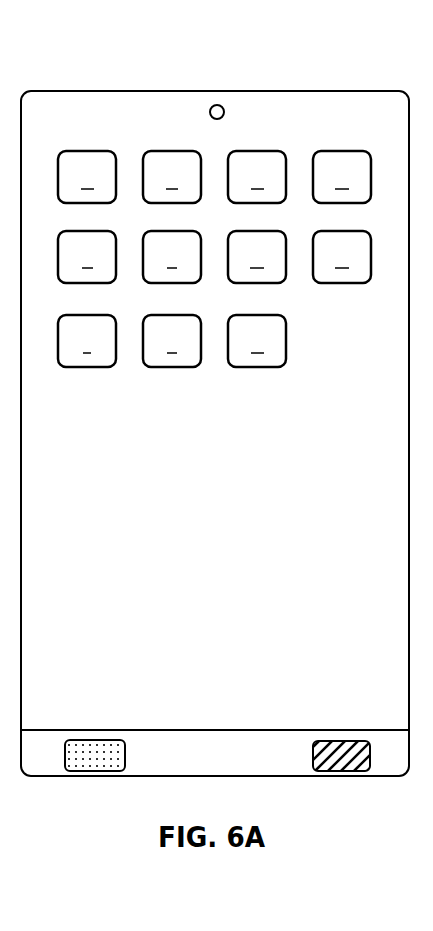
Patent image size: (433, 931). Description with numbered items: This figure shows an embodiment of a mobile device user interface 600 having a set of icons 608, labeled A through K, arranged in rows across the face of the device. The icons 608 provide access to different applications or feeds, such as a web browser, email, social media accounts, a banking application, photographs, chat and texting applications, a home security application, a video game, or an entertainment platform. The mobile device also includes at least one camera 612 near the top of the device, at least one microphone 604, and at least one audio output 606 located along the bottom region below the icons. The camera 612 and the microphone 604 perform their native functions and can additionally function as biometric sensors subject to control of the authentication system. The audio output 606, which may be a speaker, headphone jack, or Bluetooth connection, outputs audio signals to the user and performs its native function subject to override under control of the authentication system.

The mobile device user interface 600 is at (118, 605).
The microphone 604 is at (94, 740).
The audio output 606 is at (343, 737).
The icons 608 is at (258, 416).
The camera 612 is at (233, 79).